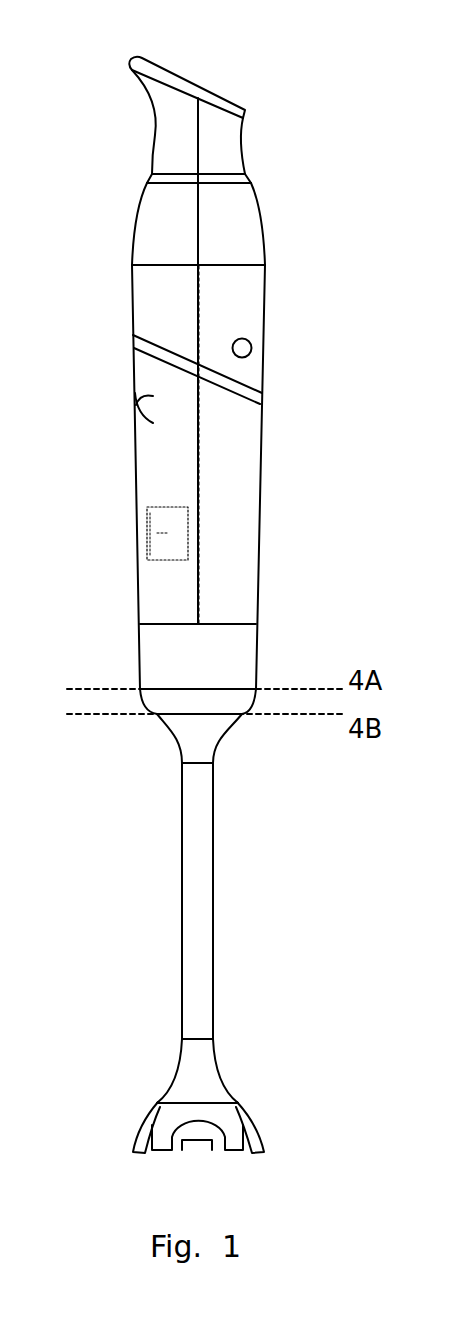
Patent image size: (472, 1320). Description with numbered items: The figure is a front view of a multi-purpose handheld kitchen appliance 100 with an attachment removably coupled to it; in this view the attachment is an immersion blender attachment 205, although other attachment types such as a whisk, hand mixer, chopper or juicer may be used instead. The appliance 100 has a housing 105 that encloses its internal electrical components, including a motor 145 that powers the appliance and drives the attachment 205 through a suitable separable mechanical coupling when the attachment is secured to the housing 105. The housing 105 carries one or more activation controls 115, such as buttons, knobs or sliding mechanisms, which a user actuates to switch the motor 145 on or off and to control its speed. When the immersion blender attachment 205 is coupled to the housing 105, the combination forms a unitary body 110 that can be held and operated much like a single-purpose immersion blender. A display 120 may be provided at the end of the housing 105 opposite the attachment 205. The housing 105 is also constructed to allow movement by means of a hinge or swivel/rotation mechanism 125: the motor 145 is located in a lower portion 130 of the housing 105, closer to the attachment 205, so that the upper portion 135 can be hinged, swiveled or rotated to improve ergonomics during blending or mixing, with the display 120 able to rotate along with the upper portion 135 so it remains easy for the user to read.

The multi-purpose handheld kitchen appliance 100 is at (100, 141).
The housing 105 is at (243, 452).
The unitary body 110 is at (100, 658).
The activation controls 115 is at (252, 348).
The display 120 is at (170, 70).
The swivel/rotation mechanism 125 is at (133, 347).
The lower portion 130 is at (243, 520).
The upper portion 135 is at (243, 238).
The motor 145 is at (143, 530).
The immersion blender attachment 205 is at (205, 895).